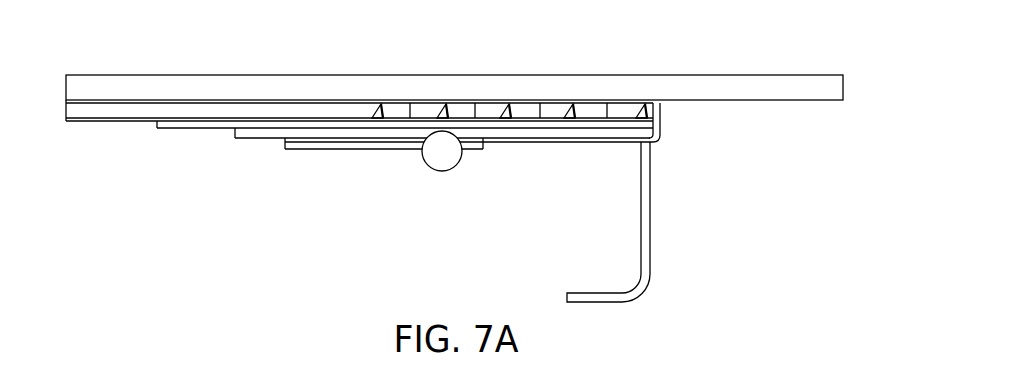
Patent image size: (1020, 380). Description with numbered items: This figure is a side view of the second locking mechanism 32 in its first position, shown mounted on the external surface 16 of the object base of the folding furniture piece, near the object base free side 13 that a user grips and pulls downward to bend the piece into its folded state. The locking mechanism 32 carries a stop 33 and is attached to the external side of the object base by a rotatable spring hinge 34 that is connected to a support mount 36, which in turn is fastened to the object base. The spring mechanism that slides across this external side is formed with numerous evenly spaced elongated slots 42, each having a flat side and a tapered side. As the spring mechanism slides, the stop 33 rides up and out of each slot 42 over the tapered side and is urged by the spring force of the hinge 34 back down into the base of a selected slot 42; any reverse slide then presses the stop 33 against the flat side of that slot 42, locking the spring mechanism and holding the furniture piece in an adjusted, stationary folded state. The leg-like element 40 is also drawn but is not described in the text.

The object base free side 13 is at (843, 86).
The external surface 16 is at (802, 100).
The elongated slots 42 is at (377, 114).
The support mount 36 is at (180, 129).
The stop 33 is at (662, 115).
The locking mechanism 32 is at (543, 221).
The spring hinge 34 is at (443, 160).
The support leg 40 is at (653, 255).